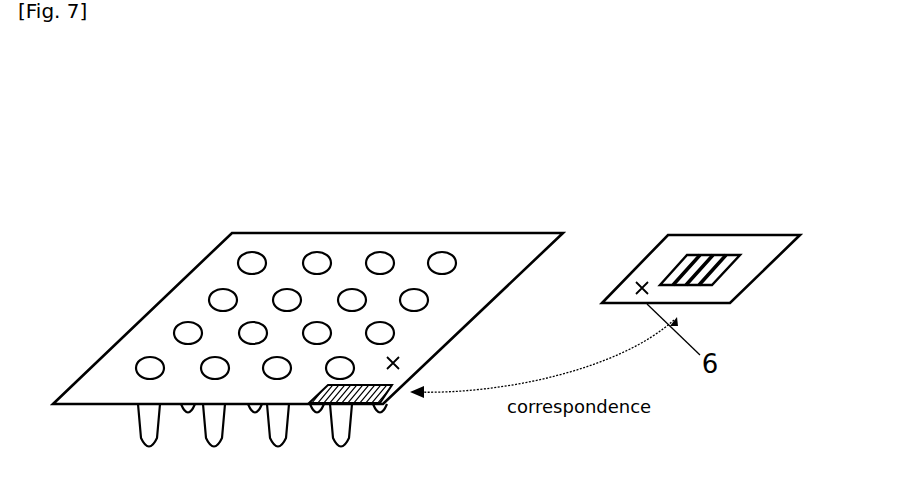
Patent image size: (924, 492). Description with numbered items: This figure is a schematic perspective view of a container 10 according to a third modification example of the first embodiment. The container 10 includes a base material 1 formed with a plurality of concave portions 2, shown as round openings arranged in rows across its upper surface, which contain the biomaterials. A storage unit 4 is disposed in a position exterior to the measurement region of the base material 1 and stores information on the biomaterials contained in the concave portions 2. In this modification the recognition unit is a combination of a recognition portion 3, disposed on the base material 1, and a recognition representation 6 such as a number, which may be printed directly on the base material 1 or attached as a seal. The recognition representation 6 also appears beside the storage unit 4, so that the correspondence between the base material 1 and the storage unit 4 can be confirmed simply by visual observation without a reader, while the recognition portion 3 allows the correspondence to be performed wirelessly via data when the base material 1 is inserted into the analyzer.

The base material 1 is at (494, 247).
The concave portions 2 is at (382, 252).
The recognition portion 3 is at (398, 398).
The storage unit 4 is at (722, 268).
The recognition representation 6 is at (405, 366).
The container 10 is at (616, 132).